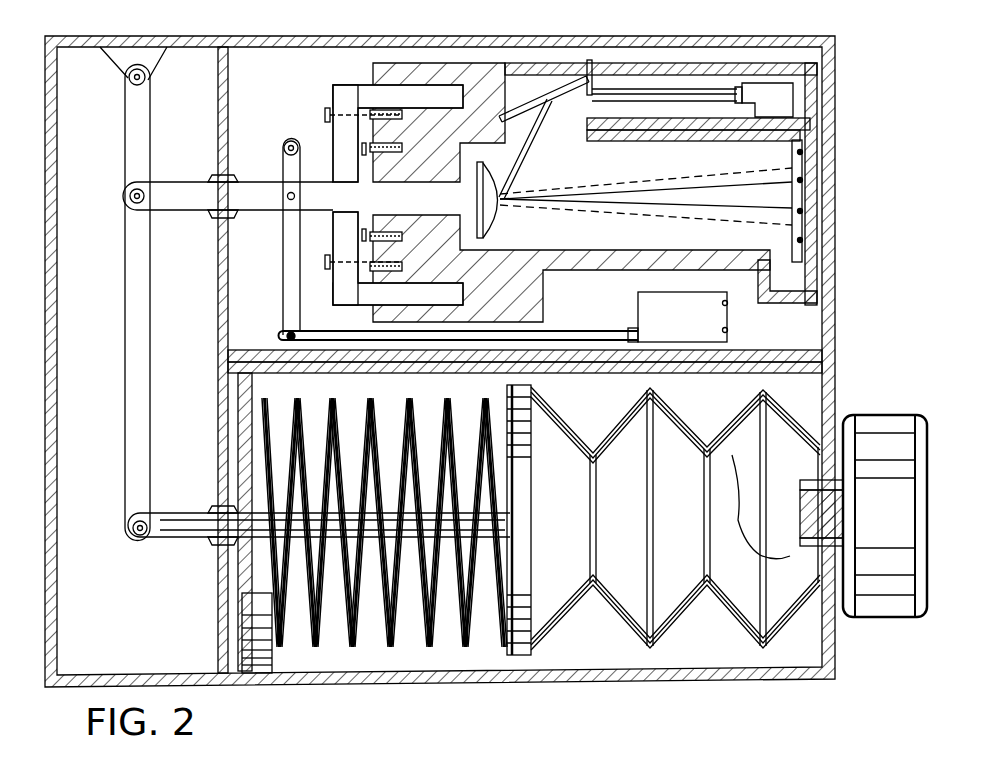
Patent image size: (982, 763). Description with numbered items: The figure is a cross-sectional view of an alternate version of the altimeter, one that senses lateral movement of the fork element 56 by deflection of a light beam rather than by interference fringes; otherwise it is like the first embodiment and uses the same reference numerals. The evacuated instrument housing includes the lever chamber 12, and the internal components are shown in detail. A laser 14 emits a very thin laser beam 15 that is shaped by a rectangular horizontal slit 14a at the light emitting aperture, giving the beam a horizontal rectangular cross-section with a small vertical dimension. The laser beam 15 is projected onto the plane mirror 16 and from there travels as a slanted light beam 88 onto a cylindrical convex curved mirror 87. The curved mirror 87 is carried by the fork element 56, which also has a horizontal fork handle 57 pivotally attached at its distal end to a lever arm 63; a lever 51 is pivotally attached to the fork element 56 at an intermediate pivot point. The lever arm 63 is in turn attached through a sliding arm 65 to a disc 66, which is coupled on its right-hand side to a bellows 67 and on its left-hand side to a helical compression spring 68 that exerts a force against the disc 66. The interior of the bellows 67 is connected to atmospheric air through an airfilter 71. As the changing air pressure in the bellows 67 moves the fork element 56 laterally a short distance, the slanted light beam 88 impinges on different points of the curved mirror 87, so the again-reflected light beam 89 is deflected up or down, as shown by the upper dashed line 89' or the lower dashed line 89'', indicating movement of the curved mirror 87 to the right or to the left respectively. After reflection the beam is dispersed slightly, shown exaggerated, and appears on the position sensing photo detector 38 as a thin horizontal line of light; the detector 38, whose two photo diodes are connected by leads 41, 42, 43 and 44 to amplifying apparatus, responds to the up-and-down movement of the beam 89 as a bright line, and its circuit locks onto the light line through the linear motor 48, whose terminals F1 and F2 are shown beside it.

The lever chamber 12 is at (142, 612).
The laser 14 is at (780, 100).
The rectangular horizontal slit 14a is at (738, 86).
The laser beam 15 is at (678, 80).
The plane mirror 16 is at (522, 103).
The photo detector 38 is at (783, 262).
The lead 41 is at (802, 152).
The lead 42 is at (802, 180).
The lead 43 is at (802, 211).
The lead 44 is at (802, 240).
The linear motor 48 is at (685, 318).
The lever 51 is at (291, 292).
The fork element 56 is at (569, 162).
The fork handle 57 is at (180, 212).
The lever arm 63 is at (130, 322).
The sliding arm 65 is at (180, 540).
The disc 66 is at (530, 388).
The bellows 67 is at (670, 412).
The helical compression spring 68 is at (385, 630).
The airfilter 71 is at (875, 418).
The cylindrical convex curved mirror 87 is at (502, 218).
The slanted light beam 88 is at (530, 150).
The reflected light beam 89 is at (646, 179).
The upper dashed line 89' is at (646, 168).
The lower dashed line 89'' is at (646, 226).
The terminal F1 is at (728, 301).
The terminal F2 is at (730, 329).